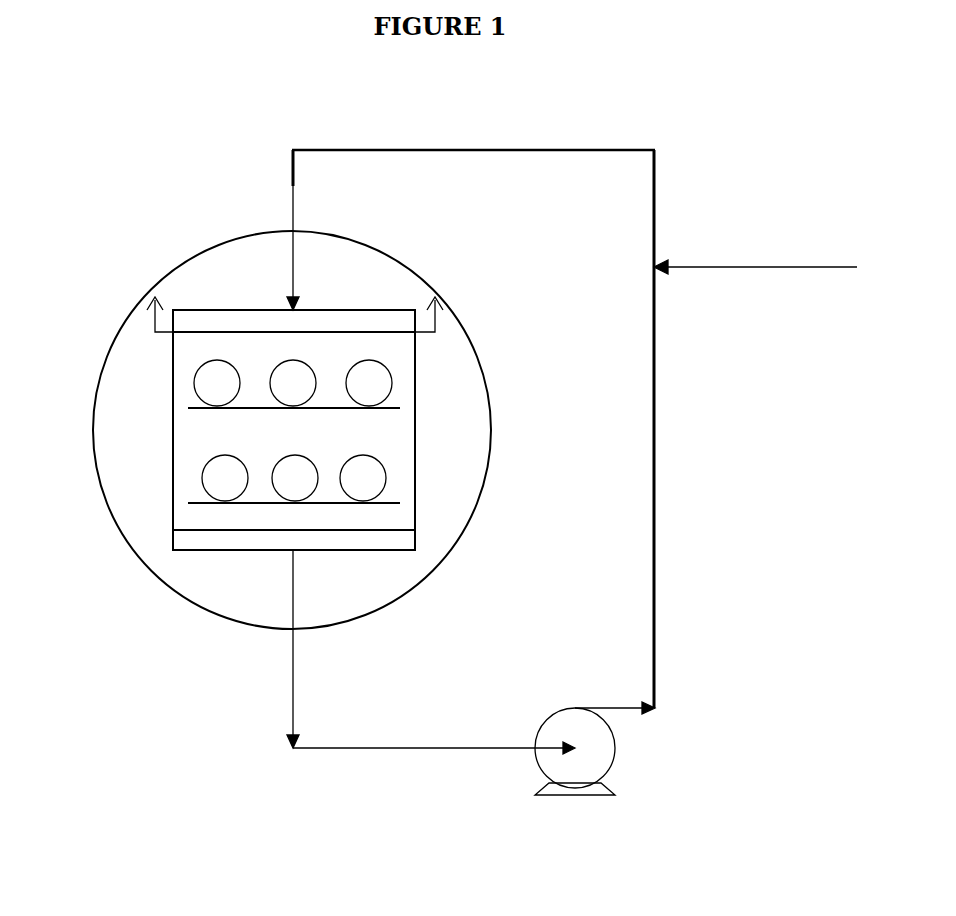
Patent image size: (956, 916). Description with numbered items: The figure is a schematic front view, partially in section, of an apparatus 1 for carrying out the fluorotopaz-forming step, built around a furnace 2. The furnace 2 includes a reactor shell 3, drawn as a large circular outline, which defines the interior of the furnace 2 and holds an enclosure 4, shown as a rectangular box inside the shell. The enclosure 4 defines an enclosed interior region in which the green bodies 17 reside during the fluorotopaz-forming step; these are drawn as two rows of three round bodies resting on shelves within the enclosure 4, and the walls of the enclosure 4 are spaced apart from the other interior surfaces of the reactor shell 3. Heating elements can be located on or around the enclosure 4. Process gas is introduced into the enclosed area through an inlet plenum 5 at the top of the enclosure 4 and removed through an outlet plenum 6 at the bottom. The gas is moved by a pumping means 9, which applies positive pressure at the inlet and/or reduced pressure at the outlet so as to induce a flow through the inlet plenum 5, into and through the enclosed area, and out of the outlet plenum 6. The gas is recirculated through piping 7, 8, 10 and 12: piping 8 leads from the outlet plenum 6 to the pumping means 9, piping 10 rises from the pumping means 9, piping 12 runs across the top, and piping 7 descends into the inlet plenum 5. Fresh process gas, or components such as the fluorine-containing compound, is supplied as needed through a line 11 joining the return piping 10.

The apparatus 1 is at (736, 452).
The furnace 2 is at (116, 633).
The reactor shell 3 is at (126, 291).
The enclosure 4 is at (420, 432).
The inlet plenum 5 is at (381, 318).
The outlet plenum 6 is at (355, 542).
The piping 7 is at (291, 191).
The piping 8 is at (290, 685).
The pumping means 9 is at (605, 748).
The piping 10 is at (655, 562).
The line 11 is at (755, 258).
The piping 12 is at (507, 152).
The green bodies 17 is at (248, 406).